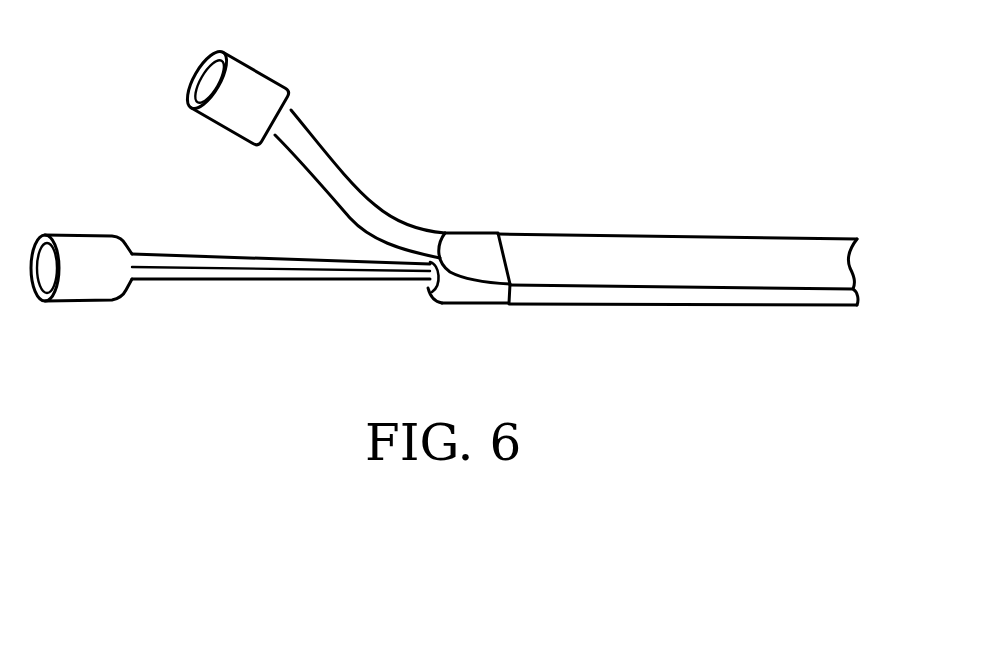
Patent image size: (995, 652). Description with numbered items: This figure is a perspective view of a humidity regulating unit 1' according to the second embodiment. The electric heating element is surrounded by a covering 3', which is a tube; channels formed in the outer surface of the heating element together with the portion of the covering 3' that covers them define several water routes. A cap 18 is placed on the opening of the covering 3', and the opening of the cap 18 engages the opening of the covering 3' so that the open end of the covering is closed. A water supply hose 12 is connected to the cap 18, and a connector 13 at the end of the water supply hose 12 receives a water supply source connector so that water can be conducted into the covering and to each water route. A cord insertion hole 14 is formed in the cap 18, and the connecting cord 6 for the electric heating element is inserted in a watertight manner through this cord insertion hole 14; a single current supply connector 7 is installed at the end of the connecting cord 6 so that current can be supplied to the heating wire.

The humidity regulating unit 1' is at (667, 80).
The covering 3' is at (678, 235).
The connecting cord 6 is at (247, 277).
The current supply connector 7 is at (100, 273).
The water supply hose 12 is at (350, 196).
The connector 13 is at (263, 93).
The cord insertion hole 14 is at (427, 287).
The cap 18 is at (481, 284).